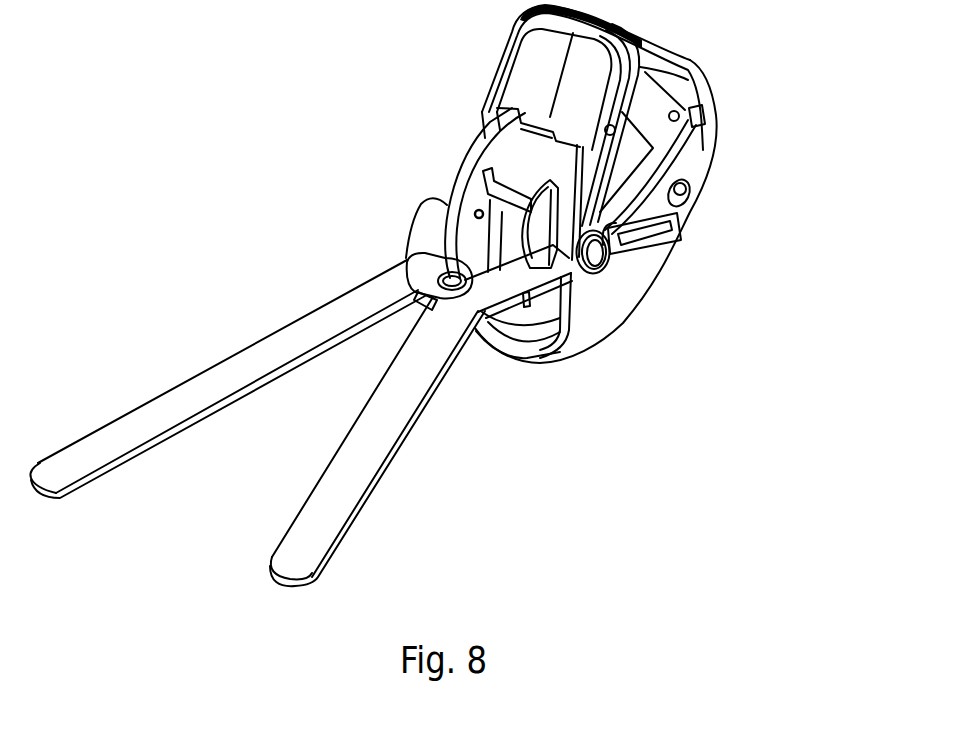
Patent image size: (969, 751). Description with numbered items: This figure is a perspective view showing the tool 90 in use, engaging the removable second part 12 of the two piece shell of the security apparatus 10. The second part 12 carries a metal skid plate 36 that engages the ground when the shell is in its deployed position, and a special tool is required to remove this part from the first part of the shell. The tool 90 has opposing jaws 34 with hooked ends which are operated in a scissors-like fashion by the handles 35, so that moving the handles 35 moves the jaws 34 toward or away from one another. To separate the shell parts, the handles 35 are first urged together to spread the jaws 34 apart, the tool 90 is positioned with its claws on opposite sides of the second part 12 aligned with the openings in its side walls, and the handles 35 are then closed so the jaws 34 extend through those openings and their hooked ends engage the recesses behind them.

The security apparatus 10 is at (772, 179).
The second part of the shell 12 is at (502, 160).
The jaws 34 is at (577, 283).
The handles 35 is at (330, 510).
The metal skid plate 36 is at (470, 238).
The tool 90 is at (397, 445).